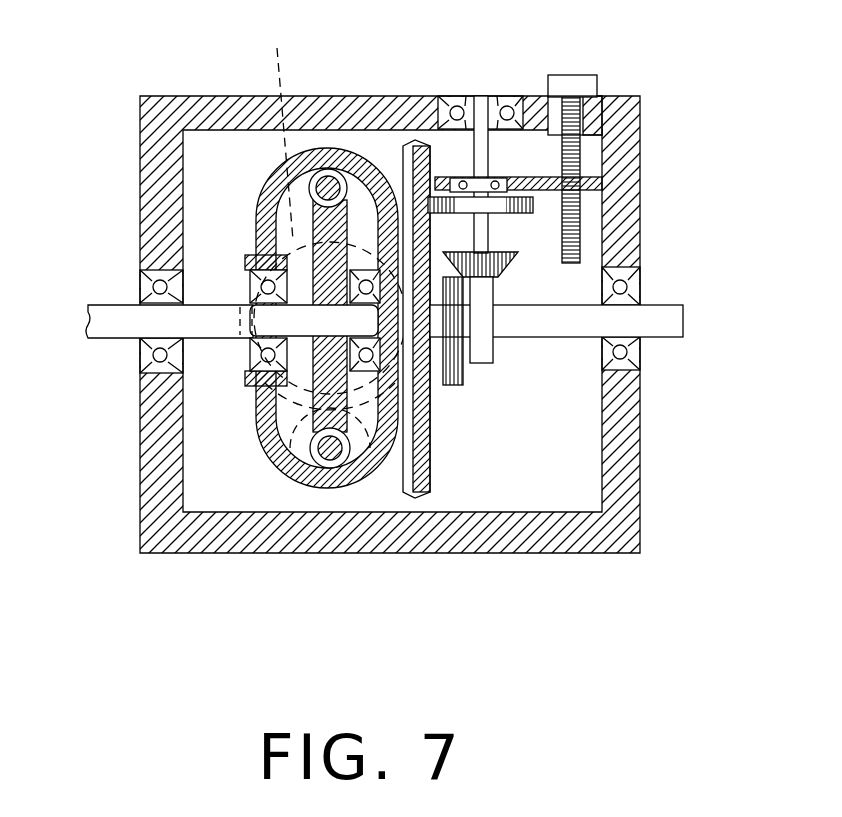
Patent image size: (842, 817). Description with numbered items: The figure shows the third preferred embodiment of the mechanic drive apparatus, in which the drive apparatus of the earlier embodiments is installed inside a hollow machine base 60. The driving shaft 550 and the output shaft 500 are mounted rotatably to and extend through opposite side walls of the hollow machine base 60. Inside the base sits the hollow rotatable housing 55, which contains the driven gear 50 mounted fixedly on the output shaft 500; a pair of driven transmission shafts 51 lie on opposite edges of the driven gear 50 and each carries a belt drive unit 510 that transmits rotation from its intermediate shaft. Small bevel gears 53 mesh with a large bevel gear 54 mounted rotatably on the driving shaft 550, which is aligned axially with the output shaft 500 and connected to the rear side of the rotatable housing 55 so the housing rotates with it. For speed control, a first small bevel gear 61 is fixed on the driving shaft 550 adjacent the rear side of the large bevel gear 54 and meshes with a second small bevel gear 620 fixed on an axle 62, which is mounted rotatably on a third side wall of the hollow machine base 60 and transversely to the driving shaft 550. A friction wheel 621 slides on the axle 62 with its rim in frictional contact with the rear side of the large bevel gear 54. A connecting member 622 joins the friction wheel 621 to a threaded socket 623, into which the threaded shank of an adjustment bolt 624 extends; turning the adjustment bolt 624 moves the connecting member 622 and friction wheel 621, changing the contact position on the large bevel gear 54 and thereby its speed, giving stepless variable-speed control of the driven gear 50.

The hollow machine base 60 is at (632, 184).
The output shaft 500 is at (110, 325).
The driving shaft 550 is at (686, 317).
The rotatable housing 55 is at (270, 200).
The driven gear 50 is at (345, 377).
The driven transmission shaft 51 is at (330, 170).
The small bevel gear 53 is at (323, 215).
The belt drive unit 510 is at (292, 440).
The large bevel gear 54 is at (427, 460).
The first small bevel gear 61 is at (468, 365).
The second small bevel gear 620 is at (506, 267).
The axle 62 is at (481, 107).
The friction wheel 621 is at (446, 177).
The connecting member 622 is at (582, 218).
The threaded socket 623 is at (536, 203).
The adjustment bolt 624 is at (586, 165).